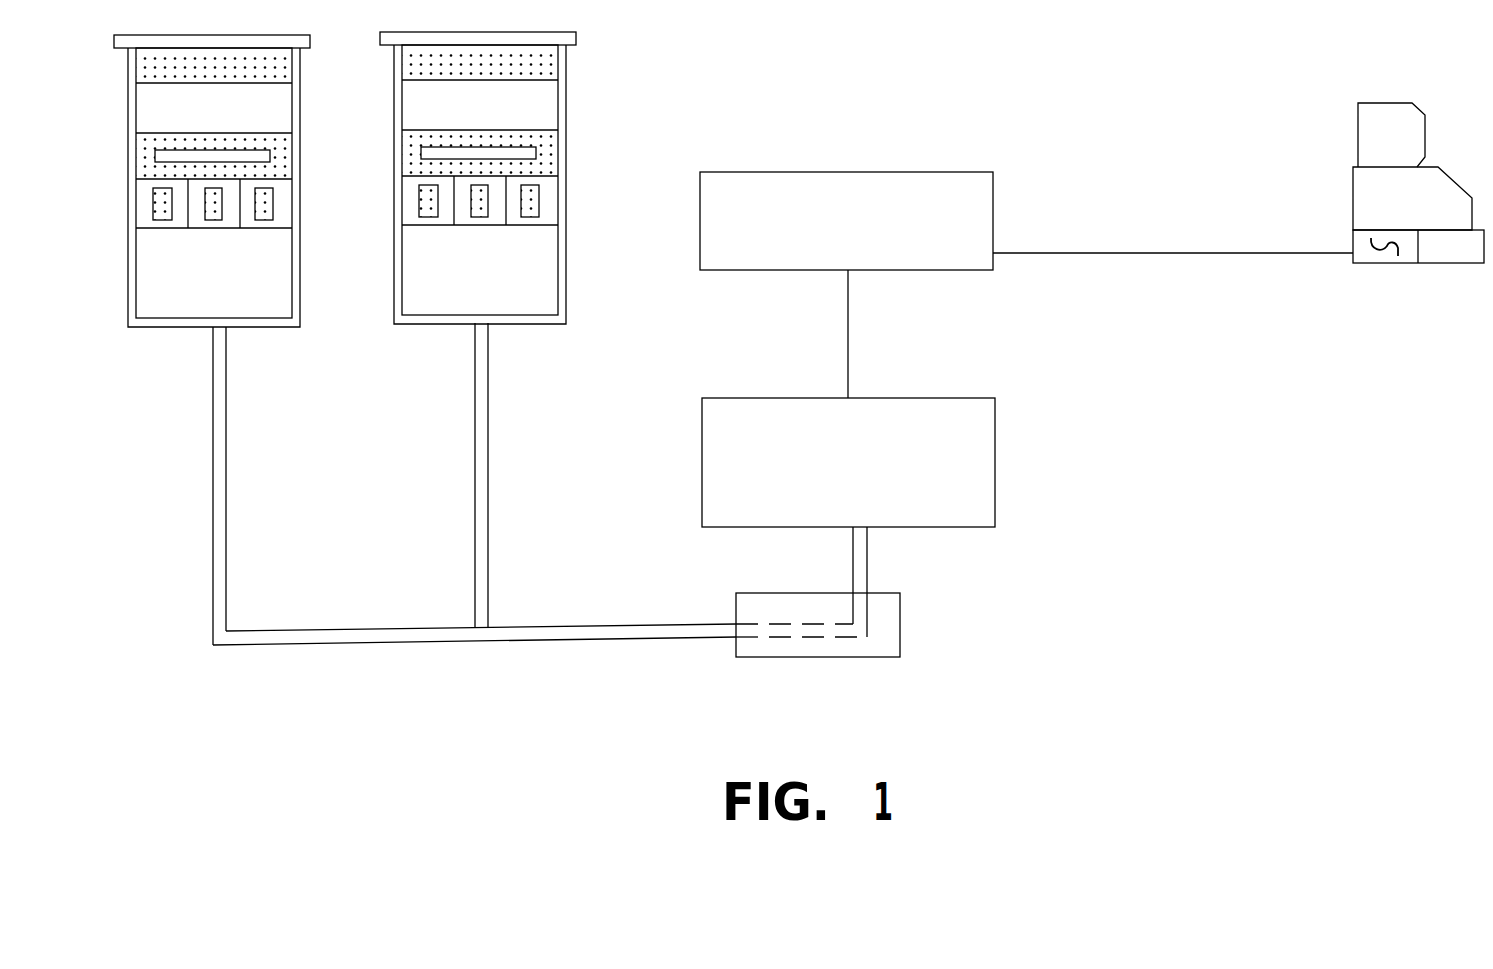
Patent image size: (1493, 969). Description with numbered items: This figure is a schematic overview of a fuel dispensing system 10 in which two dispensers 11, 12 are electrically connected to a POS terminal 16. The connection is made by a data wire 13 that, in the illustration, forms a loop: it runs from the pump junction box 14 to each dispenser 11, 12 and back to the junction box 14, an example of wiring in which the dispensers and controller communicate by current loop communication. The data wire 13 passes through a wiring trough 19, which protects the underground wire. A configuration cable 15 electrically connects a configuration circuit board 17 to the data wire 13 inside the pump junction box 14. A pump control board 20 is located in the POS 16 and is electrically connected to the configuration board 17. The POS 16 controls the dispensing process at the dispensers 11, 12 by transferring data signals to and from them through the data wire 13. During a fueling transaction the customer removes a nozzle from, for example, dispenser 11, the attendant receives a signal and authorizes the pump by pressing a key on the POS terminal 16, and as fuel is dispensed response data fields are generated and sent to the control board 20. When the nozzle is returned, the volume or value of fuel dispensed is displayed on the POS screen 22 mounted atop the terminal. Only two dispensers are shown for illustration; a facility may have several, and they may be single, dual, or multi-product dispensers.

The fuel dispensing system 10 is at (1163, 253).
The dispenser 11 is at (225, 308).
The dispenser 12 is at (495, 305).
The data wire 13 is at (310, 631).
The pump junction box 14 is at (995, 398).
The configuration cable 15 is at (848, 312).
The POS terminal 16 is at (1455, 226).
The configuration circuit board 17 is at (993, 172).
The wiring trough 19 is at (900, 593).
The pump control board 20 is at (1380, 257).
The POS screen 22 is at (1412, 103).